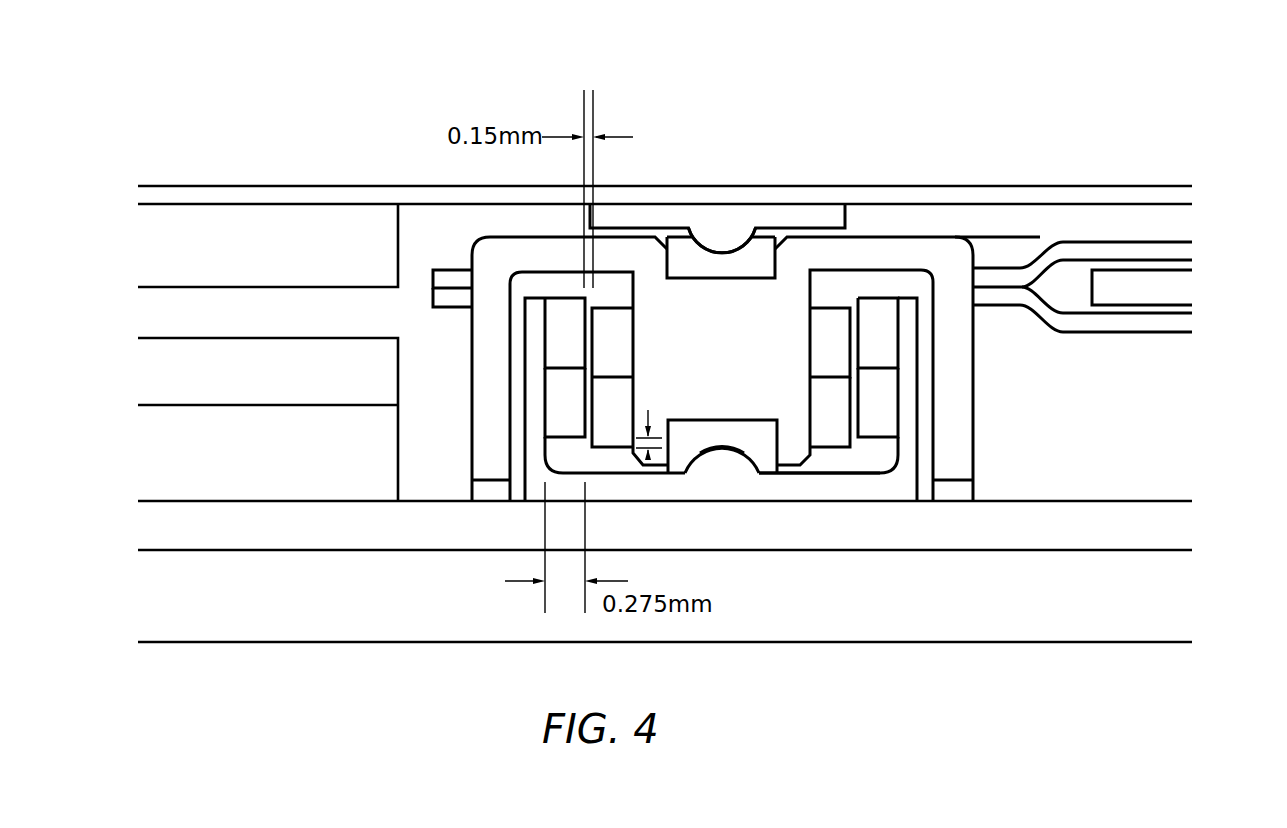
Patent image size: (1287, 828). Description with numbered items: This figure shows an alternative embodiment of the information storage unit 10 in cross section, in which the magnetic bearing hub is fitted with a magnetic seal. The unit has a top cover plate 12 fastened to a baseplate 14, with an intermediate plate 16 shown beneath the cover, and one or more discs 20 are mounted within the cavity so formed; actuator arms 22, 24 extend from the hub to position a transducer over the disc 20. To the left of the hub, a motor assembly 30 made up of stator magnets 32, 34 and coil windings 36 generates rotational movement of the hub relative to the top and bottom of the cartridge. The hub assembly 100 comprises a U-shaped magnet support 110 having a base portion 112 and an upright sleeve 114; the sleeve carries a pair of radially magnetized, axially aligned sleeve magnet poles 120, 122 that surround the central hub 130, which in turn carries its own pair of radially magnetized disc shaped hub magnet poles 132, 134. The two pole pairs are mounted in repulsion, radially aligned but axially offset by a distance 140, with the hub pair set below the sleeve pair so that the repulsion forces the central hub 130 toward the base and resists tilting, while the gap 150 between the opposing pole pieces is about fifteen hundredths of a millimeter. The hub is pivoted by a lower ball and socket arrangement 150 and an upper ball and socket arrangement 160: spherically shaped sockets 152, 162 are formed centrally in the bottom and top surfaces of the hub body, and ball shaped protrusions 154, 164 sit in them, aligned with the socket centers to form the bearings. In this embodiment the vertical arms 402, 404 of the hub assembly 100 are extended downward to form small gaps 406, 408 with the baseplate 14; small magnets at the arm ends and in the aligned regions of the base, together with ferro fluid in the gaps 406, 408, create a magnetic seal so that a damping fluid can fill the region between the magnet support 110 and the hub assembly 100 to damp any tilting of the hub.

The information storage unit 10 is at (880, 186).
The top cover plate 12 is at (1192, 192).
The baseplate 14 is at (1170, 522).
The inner cover plate 16 is at (1182, 223).
The disc 20 is at (1172, 286).
The actuator arm 22 is at (1185, 253).
The actuator arm 24 is at (1185, 323).
The motor assembly 30 is at (457, 280).
The stator magnet 32 is at (357, 258).
The stator magnet 34 is at (362, 384).
The coil windings 36 is at (452, 300).
The hub assembly 100 is at (972, 457).
The U-shaped magnet support 110 is at (843, 482).
The base portion 112 is at (750, 487).
The upright sleeve 114 is at (532, 465).
The sleeve magnet pole 120 is at (553, 352).
The sleeve magnet pole 122 is at (555, 380).
The central hub 130 is at (740, 364).
The hub magnet pole 132 is at (822, 326).
The hub magnet pole 134 is at (822, 392).
The axial offset 140 is at (655, 410).
The ball and socket arrangement 150 is at (584, 90).
The spherically shaped socket 152 is at (719, 435).
The ball shaped protrusion 154 is at (737, 453).
The ball and socket arrangement 160 is at (702, 220).
The spherically shaped socket 162 is at (740, 270).
The ball shaped protrusion 164 is at (743, 245).
The vertical arm 402 is at (482, 404).
The vertical arm 404 is at (965, 423).
The gap 406 is at (477, 489).
The gap 408 is at (968, 487).